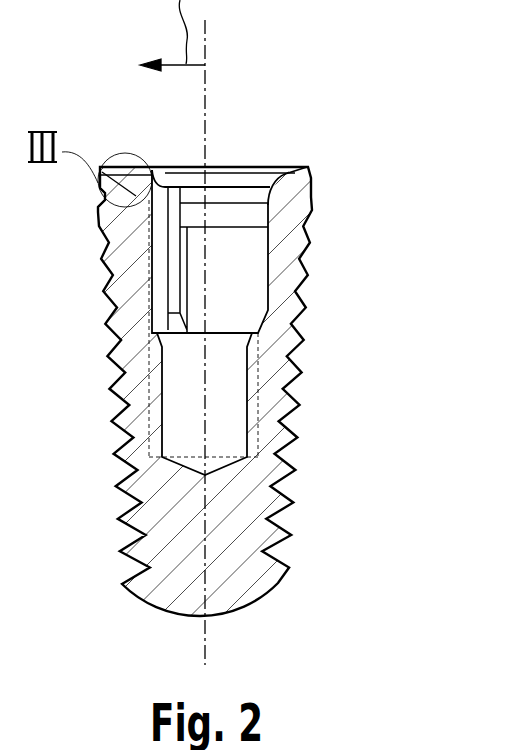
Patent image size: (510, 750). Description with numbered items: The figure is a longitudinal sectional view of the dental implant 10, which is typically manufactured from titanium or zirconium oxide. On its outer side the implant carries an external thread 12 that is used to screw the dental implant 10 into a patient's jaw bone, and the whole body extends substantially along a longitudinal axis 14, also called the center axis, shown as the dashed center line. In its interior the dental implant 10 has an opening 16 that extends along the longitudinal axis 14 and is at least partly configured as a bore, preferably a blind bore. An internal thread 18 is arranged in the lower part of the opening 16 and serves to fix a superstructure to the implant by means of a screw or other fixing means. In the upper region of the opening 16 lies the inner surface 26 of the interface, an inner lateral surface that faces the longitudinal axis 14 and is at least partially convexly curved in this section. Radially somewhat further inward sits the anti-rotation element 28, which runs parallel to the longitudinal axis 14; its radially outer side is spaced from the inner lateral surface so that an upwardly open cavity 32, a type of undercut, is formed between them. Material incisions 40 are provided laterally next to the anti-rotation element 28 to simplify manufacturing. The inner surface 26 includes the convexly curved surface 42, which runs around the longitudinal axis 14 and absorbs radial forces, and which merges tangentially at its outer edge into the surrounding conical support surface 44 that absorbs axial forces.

The dental implant 10 is at (255, 332).
The external thread 12 is at (288, 412).
The longitudinal axis 14 is at (208, 31).
The opening 16 is at (237, 275).
The internal thread 18 is at (253, 367).
The inner surface 26 is at (229, 184).
The anti-rotation element 28 is at (150, 200).
The cavity 32 is at (137, 190).
The material incisions 40 is at (175, 271).
The convexly curved surface 42 is at (266, 178).
The support surface 44 is at (110, 164).